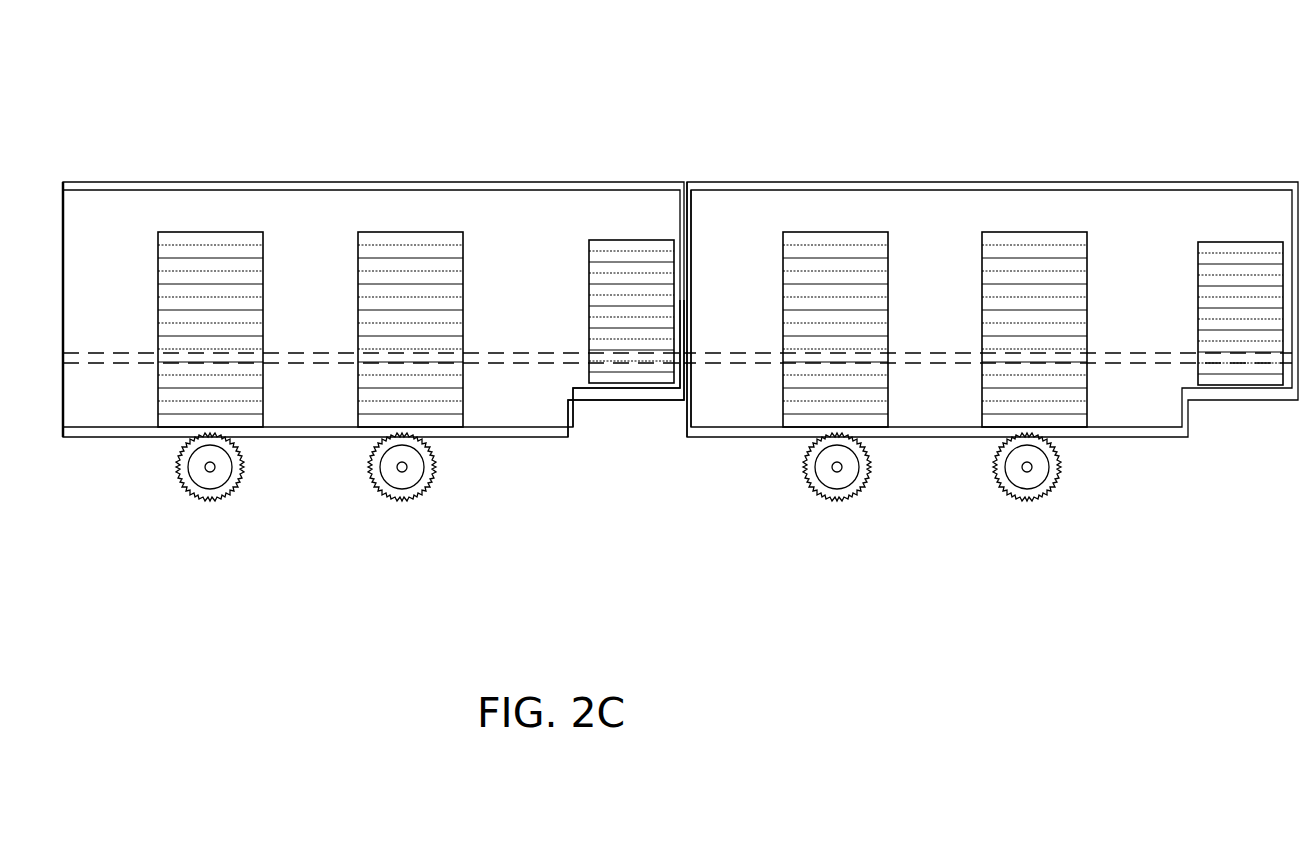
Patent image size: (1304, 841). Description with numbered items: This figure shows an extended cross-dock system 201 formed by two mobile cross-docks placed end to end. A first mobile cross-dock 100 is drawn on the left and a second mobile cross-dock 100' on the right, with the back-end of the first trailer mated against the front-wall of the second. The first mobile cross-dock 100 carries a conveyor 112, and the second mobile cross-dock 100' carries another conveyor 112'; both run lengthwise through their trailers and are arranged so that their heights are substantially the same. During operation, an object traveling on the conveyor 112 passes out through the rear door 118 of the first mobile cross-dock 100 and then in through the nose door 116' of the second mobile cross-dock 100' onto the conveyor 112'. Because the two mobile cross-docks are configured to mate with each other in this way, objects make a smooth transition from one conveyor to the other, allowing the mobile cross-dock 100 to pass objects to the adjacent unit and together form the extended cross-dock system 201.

The extended cross-dock system 201 is at (145, 79).
The mobile cross-dock 100 is at (346, 273).
The second mobile cross-dock 100' is at (991, 277).
The rear door 118 is at (578, 125).
The nose door 116' is at (751, 249).
The conveyor 112 is at (346, 339).
The conveyor 112' is at (988, 396).